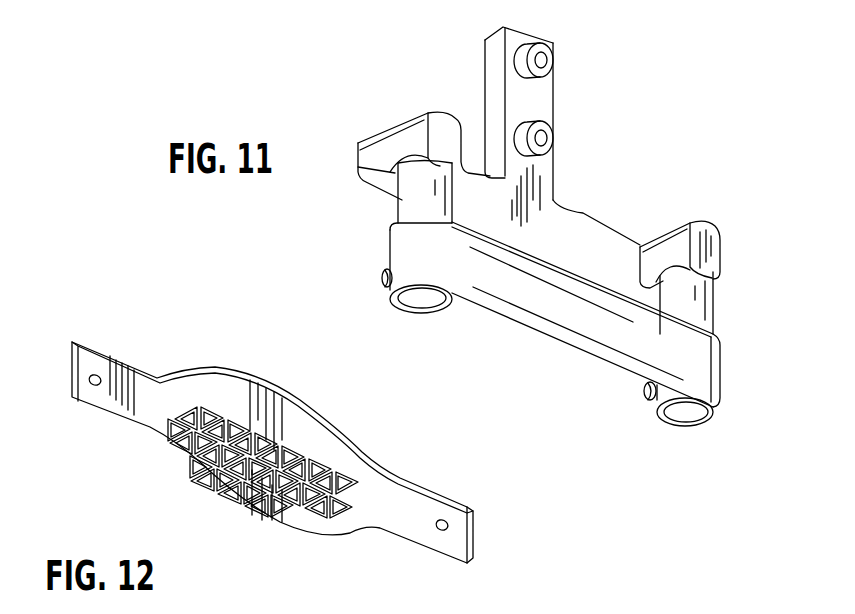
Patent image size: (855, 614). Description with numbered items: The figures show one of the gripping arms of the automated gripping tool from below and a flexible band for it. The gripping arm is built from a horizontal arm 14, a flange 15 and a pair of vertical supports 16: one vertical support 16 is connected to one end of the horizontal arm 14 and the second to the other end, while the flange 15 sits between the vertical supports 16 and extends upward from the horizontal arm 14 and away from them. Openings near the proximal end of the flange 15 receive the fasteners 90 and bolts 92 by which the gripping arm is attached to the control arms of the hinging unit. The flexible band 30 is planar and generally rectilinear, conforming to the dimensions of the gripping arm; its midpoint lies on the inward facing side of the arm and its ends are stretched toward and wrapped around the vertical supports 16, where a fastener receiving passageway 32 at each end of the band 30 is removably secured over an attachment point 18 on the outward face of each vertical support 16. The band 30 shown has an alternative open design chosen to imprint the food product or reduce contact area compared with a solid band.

In FIG. 11, the horizontal arm 14 is at (604, 222).
In FIG. 11, the flange 15 is at (513, 93).
In FIG. 11, the vertical support 16 is at (408, 210).
In FIG. 11, the attachment point 18 is at (383, 282).
In FIG. 11, the flexible band 30 is at (708, 372).
In FIG. 12, the flexible band 30 is at (408, 497).
In FIG. 12, the fastener receiving passageway 32 is at (95, 374).
In FIG. 11, the fastener 90 is at (548, 68).
In FIG. 11, the bolt 92 is at (616, 86).